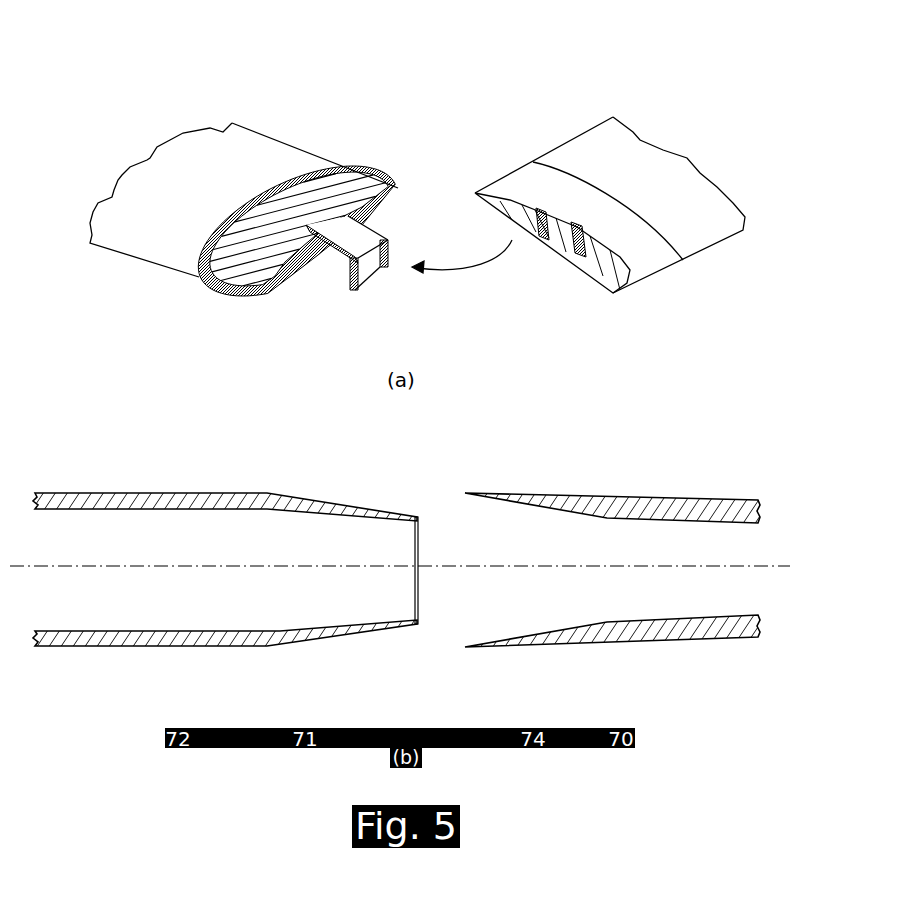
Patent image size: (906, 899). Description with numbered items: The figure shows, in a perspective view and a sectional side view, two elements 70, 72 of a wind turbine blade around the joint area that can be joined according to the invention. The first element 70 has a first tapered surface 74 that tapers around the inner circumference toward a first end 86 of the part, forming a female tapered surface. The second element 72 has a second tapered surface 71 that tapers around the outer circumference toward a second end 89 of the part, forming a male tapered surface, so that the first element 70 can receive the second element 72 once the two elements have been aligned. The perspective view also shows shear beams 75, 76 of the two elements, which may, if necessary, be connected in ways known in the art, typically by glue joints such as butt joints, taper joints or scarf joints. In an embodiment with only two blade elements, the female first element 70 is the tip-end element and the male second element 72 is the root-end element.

The first element 70 is at (569, 122).
The second tapered surface 71 is at (328, 172).
The second element 72 is at (245, 88).
The first tapered surface 74 is at (523, 220).
The shear beam 75 is at (337, 272).
The shear beam 76 is at (580, 273).
The first end 86 is at (512, 268).
The second end 89 is at (368, 273).